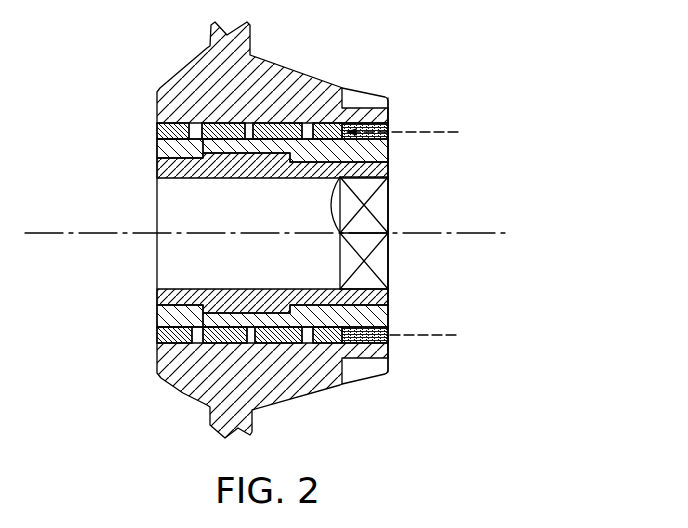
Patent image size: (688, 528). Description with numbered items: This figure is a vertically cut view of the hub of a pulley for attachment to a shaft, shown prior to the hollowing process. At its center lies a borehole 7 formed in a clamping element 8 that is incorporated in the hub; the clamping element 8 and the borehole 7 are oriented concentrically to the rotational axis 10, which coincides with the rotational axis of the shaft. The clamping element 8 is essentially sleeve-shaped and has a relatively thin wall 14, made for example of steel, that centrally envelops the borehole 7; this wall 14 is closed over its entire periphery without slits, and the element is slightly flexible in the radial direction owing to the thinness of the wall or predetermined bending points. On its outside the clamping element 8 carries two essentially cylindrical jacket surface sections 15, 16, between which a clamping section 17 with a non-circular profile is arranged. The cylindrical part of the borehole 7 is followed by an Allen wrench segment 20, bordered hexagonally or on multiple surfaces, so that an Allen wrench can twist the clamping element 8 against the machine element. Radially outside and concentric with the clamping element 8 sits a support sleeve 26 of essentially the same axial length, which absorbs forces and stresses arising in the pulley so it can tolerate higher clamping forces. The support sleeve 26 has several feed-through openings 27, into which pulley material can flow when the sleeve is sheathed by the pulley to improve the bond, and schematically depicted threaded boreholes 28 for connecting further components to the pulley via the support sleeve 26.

The borehole 7 is at (196, 257).
The clamping element 8 is at (390, 176).
The rotational axis 10 is at (472, 233).
The wall 14 is at (190, 172).
The jacket surface section 15 is at (157, 152).
The jacket surface section 16 is at (390, 152).
The clamping section 17 is at (289, 123).
The Allen wrench segment 20 is at (390, 262).
The support sleeve 26 is at (218, 122).
The feed-through openings 27 is at (247, 121).
The threaded boreholes 28 is at (392, 128).